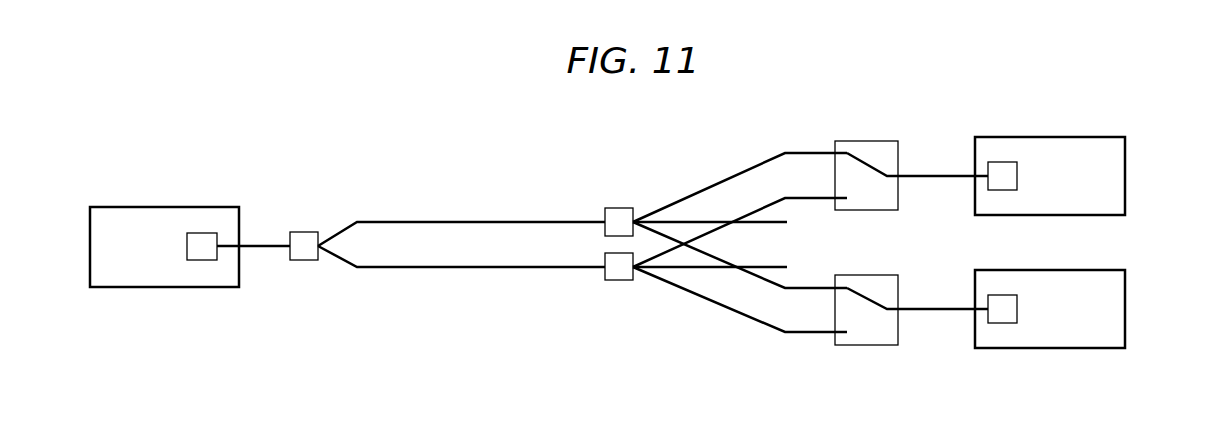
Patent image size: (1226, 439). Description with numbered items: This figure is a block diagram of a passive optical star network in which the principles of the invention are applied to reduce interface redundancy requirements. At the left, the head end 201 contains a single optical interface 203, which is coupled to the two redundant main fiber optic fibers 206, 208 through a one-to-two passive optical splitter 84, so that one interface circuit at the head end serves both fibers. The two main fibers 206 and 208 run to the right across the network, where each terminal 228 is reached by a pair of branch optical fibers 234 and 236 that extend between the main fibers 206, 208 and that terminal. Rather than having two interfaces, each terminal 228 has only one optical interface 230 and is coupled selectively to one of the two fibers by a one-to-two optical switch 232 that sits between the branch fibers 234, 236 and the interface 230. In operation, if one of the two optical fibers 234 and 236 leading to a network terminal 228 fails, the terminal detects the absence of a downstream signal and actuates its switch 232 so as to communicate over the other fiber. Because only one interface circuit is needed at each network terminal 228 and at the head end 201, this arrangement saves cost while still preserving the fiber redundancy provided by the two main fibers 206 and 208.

The head end 201 is at (158, 207).
The optical interface 203 is at (202, 261).
The passive optical splitter 84 is at (305, 232).
The fiber optic fiber 206 is at (477, 220).
The fiber optic fiber 208 is at (478, 268).
The optical fiber 234 is at (677, 200).
The optical fiber 236 is at (753, 211).
The optical switch 232 is at (865, 141).
The terminal 228 is at (1127, 180).
The optical interface 230 is at (1005, 190).